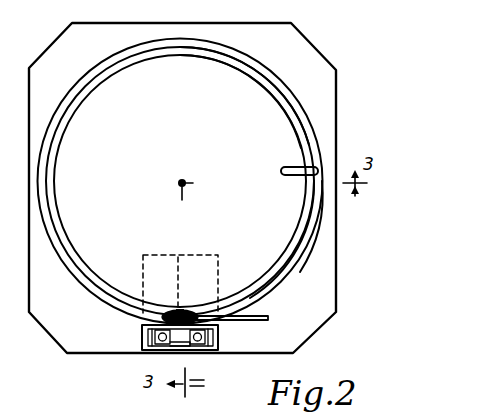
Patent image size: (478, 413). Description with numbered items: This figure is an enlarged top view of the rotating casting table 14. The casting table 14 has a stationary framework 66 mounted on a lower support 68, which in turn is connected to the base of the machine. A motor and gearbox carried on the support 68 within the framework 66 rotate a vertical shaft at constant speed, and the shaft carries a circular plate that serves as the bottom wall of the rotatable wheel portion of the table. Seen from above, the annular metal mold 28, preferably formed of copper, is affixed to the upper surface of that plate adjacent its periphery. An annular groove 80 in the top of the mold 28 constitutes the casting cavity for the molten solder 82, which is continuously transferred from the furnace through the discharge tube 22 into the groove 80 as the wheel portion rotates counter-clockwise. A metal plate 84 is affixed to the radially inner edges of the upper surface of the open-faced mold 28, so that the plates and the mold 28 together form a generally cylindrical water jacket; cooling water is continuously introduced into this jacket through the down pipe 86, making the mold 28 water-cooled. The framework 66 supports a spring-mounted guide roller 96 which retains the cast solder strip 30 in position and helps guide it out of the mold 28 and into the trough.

The casting table 14 is at (309, 110).
The discharge tube 22 is at (291, 166).
The annular metal mold 28 is at (310, 224).
The solder strip 30 is at (256, 321).
The stationary framework 66 is at (148, 353).
The lower support 68 is at (320, 281).
The annular groove 80 is at (288, 271).
The molten solder 82 is at (310, 145).
The metal plate 84 is at (255, 93).
The down pipe 86 is at (198, 164).
The guide roller 96 is at (208, 296).